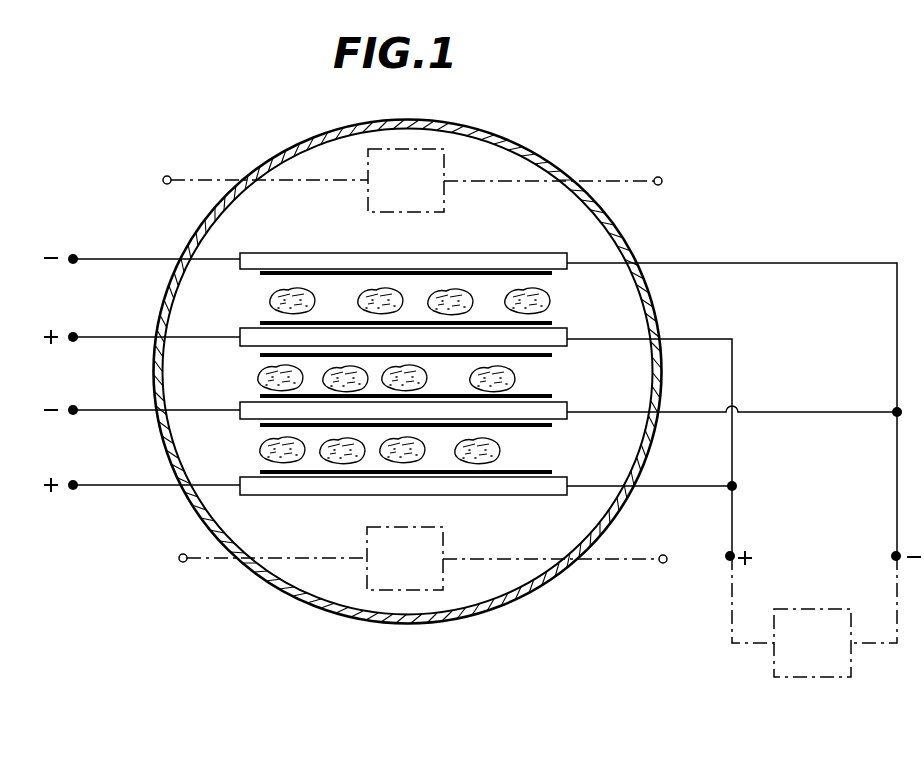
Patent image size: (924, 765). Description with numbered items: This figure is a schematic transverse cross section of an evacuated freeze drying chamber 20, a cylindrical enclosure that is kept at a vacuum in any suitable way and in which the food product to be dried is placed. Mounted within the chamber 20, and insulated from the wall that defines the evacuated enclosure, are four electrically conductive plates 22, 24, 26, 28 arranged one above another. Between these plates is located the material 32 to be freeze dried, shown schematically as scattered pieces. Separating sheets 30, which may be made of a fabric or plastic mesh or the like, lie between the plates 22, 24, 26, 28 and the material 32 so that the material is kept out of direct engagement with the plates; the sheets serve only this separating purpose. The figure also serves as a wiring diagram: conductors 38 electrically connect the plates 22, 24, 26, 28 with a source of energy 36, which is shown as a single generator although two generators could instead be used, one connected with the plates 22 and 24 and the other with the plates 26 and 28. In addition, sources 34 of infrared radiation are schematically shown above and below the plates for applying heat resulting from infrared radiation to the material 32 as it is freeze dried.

The evacuated freeze drying chamber 20 is at (268, 582).
The plate 22 is at (560, 492).
The plate 24 is at (560, 416).
The plate 26 is at (560, 343).
The plate 28 is at (560, 266).
The separating sheets 30 is at (262, 471).
The material 32 is at (268, 446).
The sources of infrared radiation 34 is at (444, 162).
The source of energy 36 is at (837, 679).
The conductors 38 is at (717, 265).